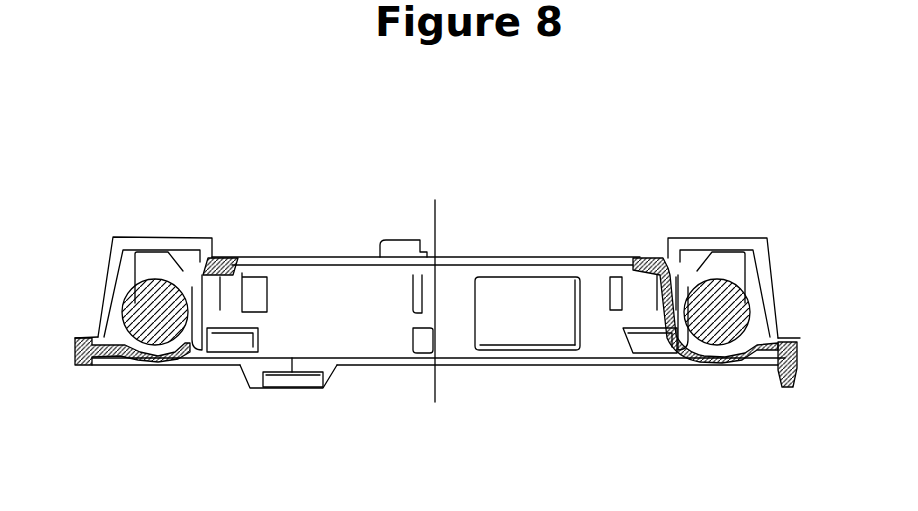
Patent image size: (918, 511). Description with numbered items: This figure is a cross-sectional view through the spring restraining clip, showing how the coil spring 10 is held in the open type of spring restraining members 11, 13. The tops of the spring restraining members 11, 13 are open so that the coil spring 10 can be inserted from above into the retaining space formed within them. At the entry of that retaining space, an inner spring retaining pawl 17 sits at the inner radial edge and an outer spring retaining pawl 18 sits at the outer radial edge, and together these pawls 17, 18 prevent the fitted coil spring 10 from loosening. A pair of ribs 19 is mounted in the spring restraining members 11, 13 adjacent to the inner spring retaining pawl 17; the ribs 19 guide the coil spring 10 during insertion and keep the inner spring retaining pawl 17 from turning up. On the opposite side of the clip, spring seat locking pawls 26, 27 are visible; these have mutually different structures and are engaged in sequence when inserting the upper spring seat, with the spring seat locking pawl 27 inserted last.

The coil spring 10 is at (122, 290).
The open type of spring restraining member 11 is at (172, 237).
The open type of spring restraining member 13 is at (410, 237).
The inner spring retaining pawl 17 is at (242, 290).
The outer spring retaining pawl 18 is at (202, 237).
The rib 19 is at (227, 237).
The spring seat locking pawl 26 is at (785, 390).
The spring seat locking pawl 27 is at (290, 388).